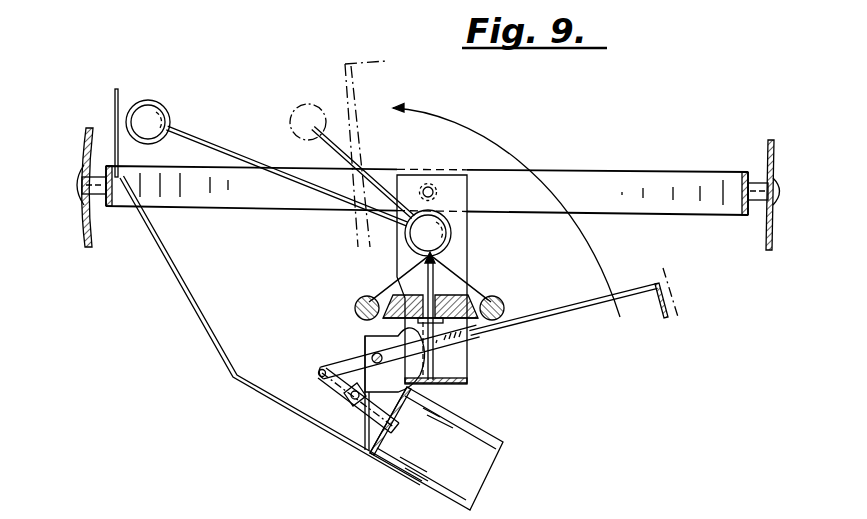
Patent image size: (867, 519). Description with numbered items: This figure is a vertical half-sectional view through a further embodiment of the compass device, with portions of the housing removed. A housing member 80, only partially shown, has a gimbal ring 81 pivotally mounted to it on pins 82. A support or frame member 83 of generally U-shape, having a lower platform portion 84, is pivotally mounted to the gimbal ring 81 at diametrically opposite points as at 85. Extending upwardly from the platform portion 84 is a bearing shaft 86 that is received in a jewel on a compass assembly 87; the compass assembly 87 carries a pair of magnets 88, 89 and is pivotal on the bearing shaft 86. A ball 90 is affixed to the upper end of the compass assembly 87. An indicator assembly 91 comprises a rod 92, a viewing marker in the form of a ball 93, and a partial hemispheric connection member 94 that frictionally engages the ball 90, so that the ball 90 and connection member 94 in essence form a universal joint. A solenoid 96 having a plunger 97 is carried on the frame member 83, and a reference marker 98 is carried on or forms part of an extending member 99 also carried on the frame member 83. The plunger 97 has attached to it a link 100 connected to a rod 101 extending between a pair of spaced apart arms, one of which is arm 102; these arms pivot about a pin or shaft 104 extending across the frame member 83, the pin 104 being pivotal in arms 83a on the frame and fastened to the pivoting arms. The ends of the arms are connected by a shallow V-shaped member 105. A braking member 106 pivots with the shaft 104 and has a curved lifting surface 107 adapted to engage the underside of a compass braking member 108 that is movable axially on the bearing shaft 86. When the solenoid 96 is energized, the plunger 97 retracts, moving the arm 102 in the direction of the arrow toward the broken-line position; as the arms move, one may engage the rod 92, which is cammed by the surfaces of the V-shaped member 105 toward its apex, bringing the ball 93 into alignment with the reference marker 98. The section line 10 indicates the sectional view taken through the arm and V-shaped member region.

The section line 10- 10 is at (727, 252).
The housing member 80 is at (83, 141).
The gimbal ring 81 is at (632, 180).
The pins 82 is at (98, 198).
The support or frame member 83 is at (465, 196).
The arms 83a is at (404, 421).
The lower platform portion 84 is at (457, 392).
The pivot points 85 is at (429, 185).
The bearing shaft 86 is at (434, 283).
The compass assembly 87 is at (371, 282).
The magnet 88 is at (358, 302).
The magnet 89 is at (497, 302).
The ball 90 is at (452, 236).
The indicator assembly 91 is at (218, 123).
The rod 92 is at (243, 161).
The ball 93 is at (148, 112).
The partial hemispheric connection member 94 is at (441, 205).
The solenoid 96 is at (468, 461).
The plunger 97 is at (363, 408).
The reference marker 98 is at (115, 100).
The extending member 99 is at (212, 345).
The link 100 is at (330, 392).
The rod 101 is at (312, 373).
The arm 102 is at (553, 318).
The pin or shaft 104 is at (368, 353).
The shallow V-shaped member 105 is at (659, 318).
The braking member 106 is at (398, 338).
The curved lifting surface 107 is at (462, 368).
The compass braking member 108 is at (462, 332).